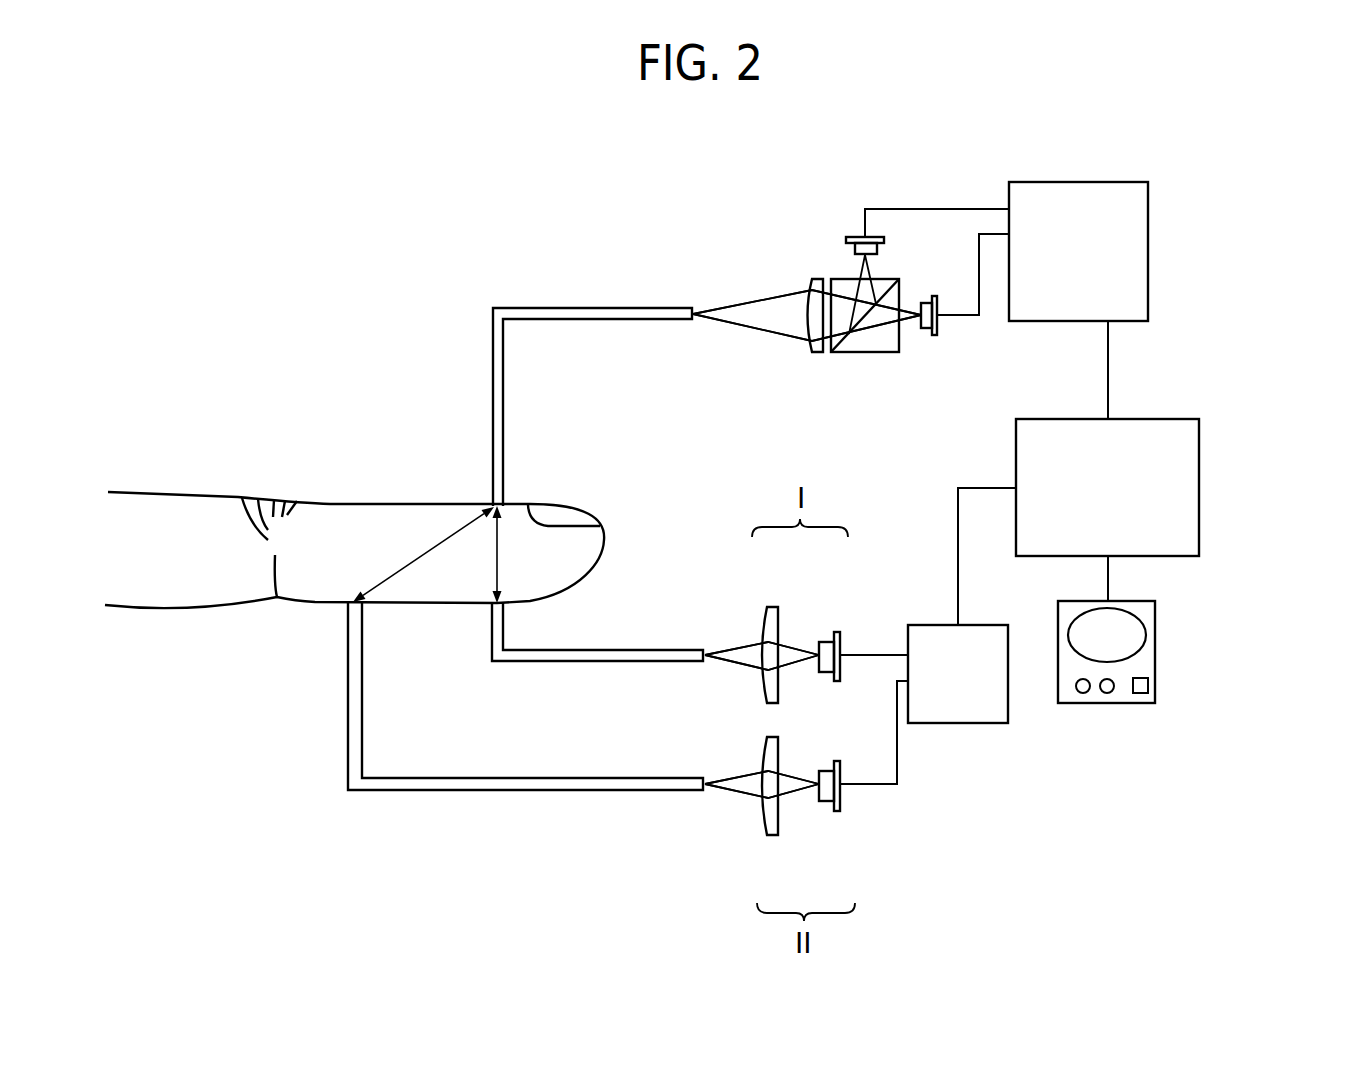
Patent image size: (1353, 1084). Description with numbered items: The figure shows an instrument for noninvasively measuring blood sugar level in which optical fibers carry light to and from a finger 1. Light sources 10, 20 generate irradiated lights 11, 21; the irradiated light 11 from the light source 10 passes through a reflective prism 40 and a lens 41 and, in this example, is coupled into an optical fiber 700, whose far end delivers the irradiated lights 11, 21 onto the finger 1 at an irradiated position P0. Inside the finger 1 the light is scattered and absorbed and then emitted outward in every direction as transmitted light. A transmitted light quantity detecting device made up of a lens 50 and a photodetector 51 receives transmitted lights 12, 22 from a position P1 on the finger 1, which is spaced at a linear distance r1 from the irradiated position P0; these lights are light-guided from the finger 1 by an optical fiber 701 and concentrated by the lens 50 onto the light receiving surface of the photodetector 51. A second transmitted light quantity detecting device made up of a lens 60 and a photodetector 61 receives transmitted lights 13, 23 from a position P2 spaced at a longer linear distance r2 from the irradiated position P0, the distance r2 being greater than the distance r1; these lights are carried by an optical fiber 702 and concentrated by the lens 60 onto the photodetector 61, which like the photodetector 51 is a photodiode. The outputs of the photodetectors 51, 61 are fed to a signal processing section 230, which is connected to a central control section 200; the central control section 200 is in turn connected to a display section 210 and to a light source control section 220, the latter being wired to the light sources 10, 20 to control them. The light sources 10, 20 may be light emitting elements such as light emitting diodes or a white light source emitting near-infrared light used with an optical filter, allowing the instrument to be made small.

The finger 1 is at (162, 512).
The light source 10 is at (851, 237).
The irradiated light 11 is at (744, 341).
The transmitted light 12 is at (719, 678).
The transmitted light 13 is at (718, 757).
The light source 20 is at (937, 338).
The irradiated light 21 is at (807, 315).
The transmitted light 22 is at (762, 656).
The transmitted light 23 is at (762, 784).
The reflective prism 40 is at (861, 355).
The lens 41 is at (809, 278).
The lens 50 is at (772, 607).
The photodetector 51 is at (831, 632).
The lens 60 is at (770, 836).
The photodetector 61 is at (840, 812).
The central control section 200 is at (1199, 477).
The display section 210 is at (1158, 655).
The light source control section 220 is at (1074, 182).
The signal processing section 230 is at (955, 724).
The optical fiber 700 is at (588, 308).
The optical fiber 701 is at (608, 650).
The optical fiber 702 is at (485, 778).
The irradiated position P0 is at (508, 491).
The position P1 is at (479, 610).
The position P2 is at (343, 610).
The linear distance r1 is at (483, 554).
The linear distance r2 is at (423, 554).